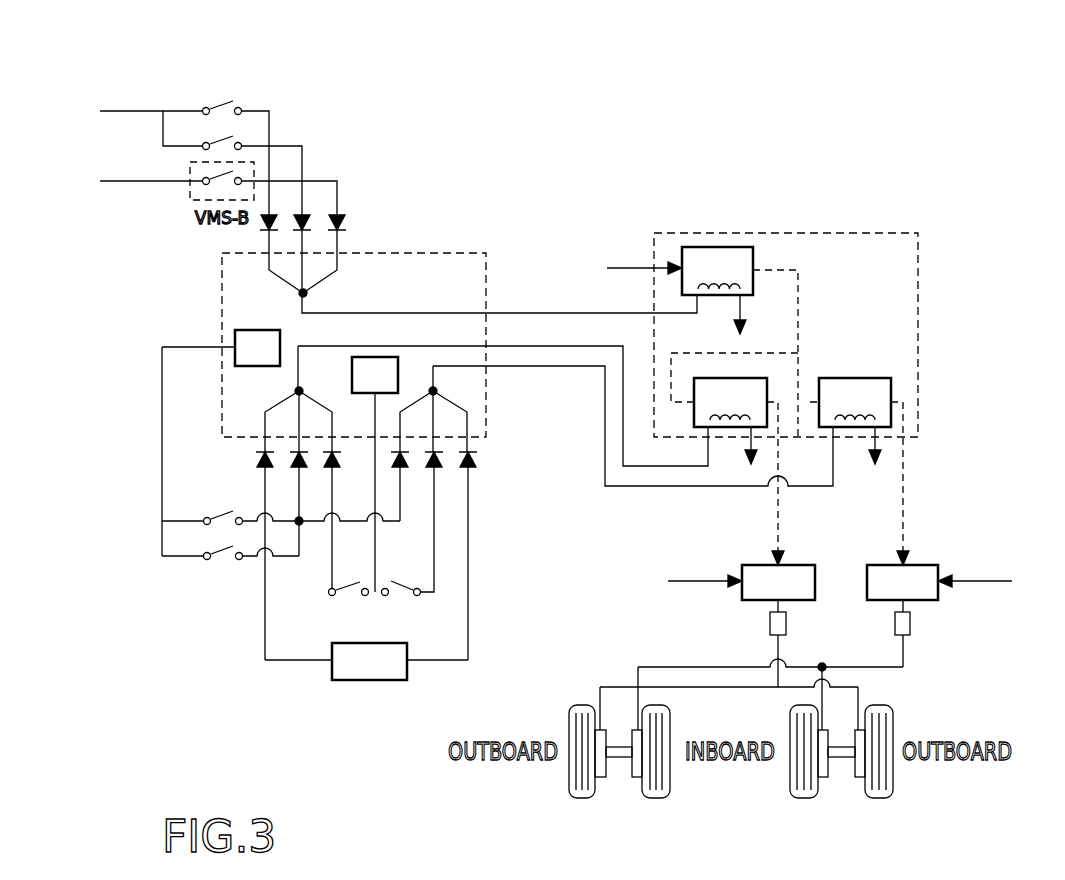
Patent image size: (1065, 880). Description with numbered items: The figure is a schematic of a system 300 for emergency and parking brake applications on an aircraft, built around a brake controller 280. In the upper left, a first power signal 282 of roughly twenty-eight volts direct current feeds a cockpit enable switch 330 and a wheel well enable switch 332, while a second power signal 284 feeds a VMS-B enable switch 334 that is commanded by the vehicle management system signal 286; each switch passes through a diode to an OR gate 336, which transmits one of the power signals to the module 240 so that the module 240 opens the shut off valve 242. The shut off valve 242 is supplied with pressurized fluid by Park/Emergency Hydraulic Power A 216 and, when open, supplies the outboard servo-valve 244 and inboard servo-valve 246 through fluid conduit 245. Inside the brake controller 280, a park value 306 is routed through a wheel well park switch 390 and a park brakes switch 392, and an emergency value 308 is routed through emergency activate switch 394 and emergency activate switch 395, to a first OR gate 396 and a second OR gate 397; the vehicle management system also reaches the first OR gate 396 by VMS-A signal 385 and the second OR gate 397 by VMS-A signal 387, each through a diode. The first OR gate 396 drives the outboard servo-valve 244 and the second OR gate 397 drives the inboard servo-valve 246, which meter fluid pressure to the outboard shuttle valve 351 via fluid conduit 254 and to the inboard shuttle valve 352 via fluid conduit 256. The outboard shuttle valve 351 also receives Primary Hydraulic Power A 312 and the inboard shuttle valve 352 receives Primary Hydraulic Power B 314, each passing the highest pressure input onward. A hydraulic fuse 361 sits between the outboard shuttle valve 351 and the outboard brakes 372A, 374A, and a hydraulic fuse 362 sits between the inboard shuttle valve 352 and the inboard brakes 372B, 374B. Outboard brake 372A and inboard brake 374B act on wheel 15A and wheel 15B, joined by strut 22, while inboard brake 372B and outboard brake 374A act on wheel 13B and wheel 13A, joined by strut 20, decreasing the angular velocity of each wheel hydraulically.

The system for emergency and parking applications 300 is at (513, 136).
The brake controller 280 is at (462, 250).
The first power signal 282 is at (133, 111).
The second power signal 284 is at (133, 181).
The cockpit enable switch 330 is at (228, 103).
The wheel well enable switch 332 is at (214, 141).
The VMS-B enable switch 334 is at (213, 176).
The OR gate 336 is at (307, 293).
The park value 306 is at (257, 348).
The emergency value 308 is at (375, 375).
The first OR gate 396 is at (296, 391).
The second OR gate 397 is at (437, 390).
The wheel well park switch 390 is at (226, 512).
The park brakes switch 392 is at (228, 560).
The emergency activate switch 394 is at (345, 588).
The emergency activate switch 395 is at (403, 584).
The VMS-A signal 385 is at (265, 648).
The VMS-A signal 387 is at (457, 662).
The vehicle management system signal 286 is at (353, 680).
The Park/Emergency Hydraulic Power A 216 is at (623, 268).
The module 240 is at (918, 277).
The shut off valve 242 is at (753, 255).
The fluid conduit 245 is at (798, 305).
The outboard servo-valve 244 is at (694, 417).
The inboard servo-valve 246 is at (891, 389).
The fluid conduit 254 is at (778, 510).
The fluid conduit 256 is at (903, 470).
The outboard shuttle valve 351 is at (750, 565).
The inboard shuttle valve 352 is at (930, 565).
The Primary Hydraulic Power A 312 is at (686, 581).
The Primary Hydraulic Power B 314 is at (996, 581).
The hydraulic fuse 361 is at (770, 623).
The hydraulic fuse 362 is at (910, 629).
The wheel 15A is at (570, 780).
The wheel 15B is at (648, 786).
The wheel 13B is at (793, 776).
The wheel 13A is at (890, 784).
The outboard brake 372A is at (600, 777).
The inboard brake 374B is at (638, 777).
The inboard brake 372B is at (823, 777).
The outboard brake 374A is at (860, 777).
The strut 22 is at (620, 760).
The strut 20 is at (842, 760).